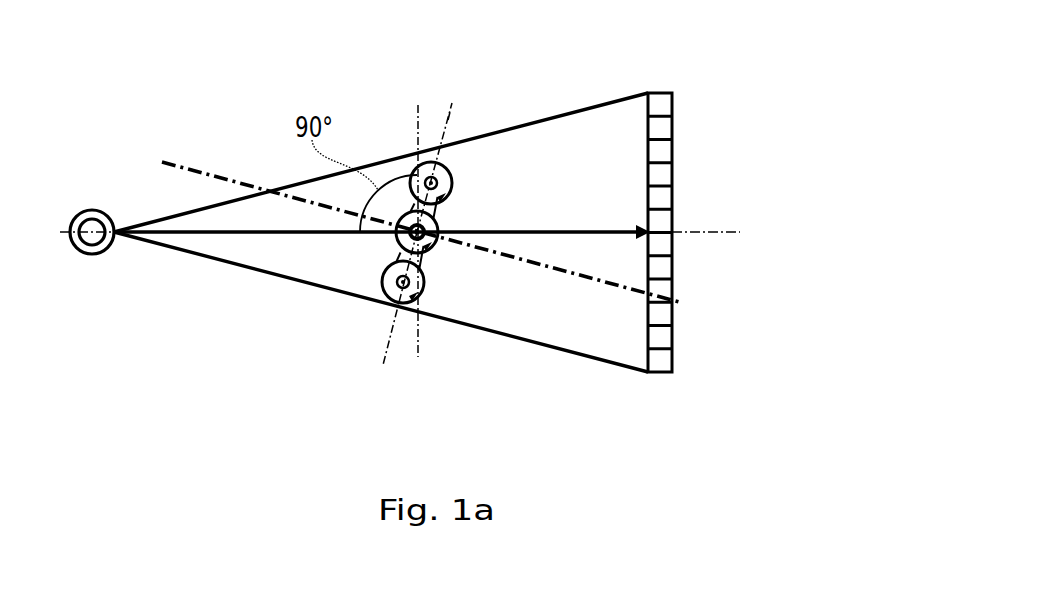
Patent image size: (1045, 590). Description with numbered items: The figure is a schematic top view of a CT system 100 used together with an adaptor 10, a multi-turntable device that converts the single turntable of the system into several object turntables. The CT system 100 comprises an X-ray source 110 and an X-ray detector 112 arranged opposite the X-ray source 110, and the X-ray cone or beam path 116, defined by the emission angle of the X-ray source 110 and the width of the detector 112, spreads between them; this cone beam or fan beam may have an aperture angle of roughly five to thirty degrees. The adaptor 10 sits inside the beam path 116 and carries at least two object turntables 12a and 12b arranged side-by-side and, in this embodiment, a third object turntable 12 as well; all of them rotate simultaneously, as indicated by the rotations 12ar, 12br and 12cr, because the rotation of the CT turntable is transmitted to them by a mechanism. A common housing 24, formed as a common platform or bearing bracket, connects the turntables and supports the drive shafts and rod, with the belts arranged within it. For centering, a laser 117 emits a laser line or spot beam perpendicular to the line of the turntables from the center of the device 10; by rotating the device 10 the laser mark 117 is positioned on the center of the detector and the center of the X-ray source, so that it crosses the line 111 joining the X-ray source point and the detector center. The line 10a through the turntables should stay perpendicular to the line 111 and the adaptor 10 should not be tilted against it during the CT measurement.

The CT system 100 is at (720, 74).
The X-ray source 110 is at (93, 210).
The line between X-ray source point and detector center 111 is at (573, 233).
The X-ray detector 112 is at (660, 358).
The X-ray cone/beam path 116 is at (583, 117).
The laser line 117 is at (227, 180).
The adaptor 10 is at (425, 199).
The phantom axis 10a is at (448, 120).
The object turntable 12 is at (425, 280).
The first object turntable 12a is at (453, 181).
The second object turntable 12b is at (439, 224).
The rotation of first object turntable 12ar is at (418, 180).
The rotation of second object turntable 12br is at (420, 243).
The rotation of third object turntable 12cr is at (393, 290).
The common housing 24 is at (397, 250).